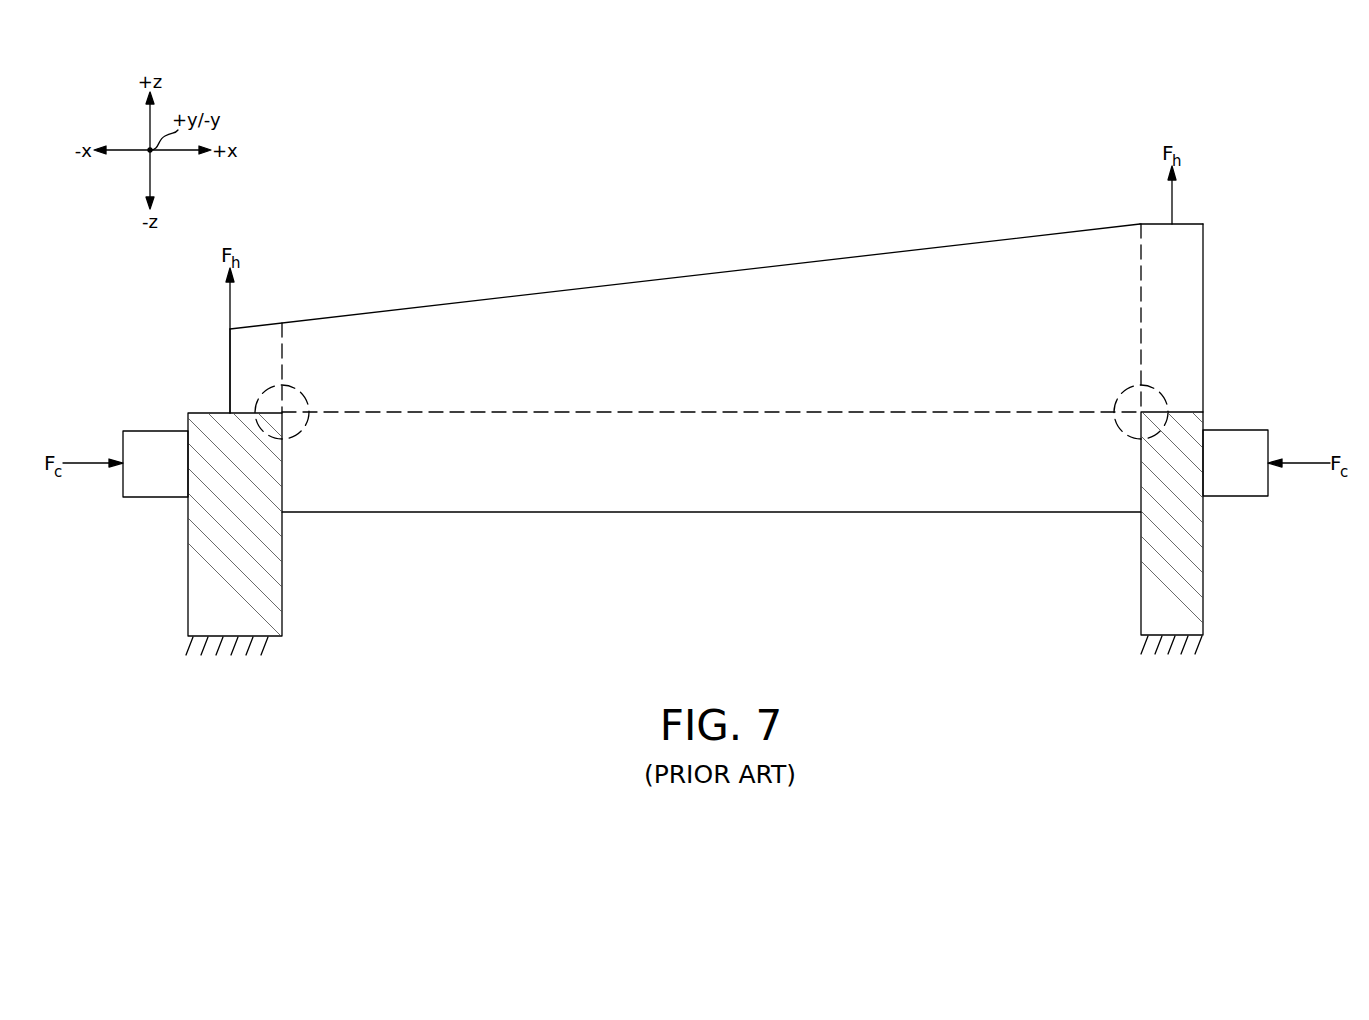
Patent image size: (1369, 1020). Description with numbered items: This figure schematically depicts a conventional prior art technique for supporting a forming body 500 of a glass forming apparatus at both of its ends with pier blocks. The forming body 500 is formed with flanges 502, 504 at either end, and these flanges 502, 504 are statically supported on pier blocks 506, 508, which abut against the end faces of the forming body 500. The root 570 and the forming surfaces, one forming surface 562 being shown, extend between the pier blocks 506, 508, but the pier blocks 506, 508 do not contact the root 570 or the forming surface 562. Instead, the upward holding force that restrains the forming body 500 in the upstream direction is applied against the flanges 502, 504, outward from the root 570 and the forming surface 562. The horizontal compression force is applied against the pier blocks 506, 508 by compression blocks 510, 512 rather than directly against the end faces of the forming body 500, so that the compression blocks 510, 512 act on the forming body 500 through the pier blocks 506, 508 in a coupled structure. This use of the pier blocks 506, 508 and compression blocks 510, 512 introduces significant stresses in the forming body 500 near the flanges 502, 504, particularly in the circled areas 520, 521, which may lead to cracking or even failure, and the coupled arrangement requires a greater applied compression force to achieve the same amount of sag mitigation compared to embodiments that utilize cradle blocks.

The forming body 500 is at (685, 210).
The flange 502 is at (262, 334).
The flange 504 is at (1192, 232).
The pier block 506 is at (187, 582).
The pier block 508 is at (1203, 608).
The compression block 510 is at (146, 430).
The compression block 512 is at (1240, 430).
The area 520 is at (300, 386).
The area 521 is at (1126, 388).
The forming surface 562 is at (960, 480).
The root 570 is at (688, 512).